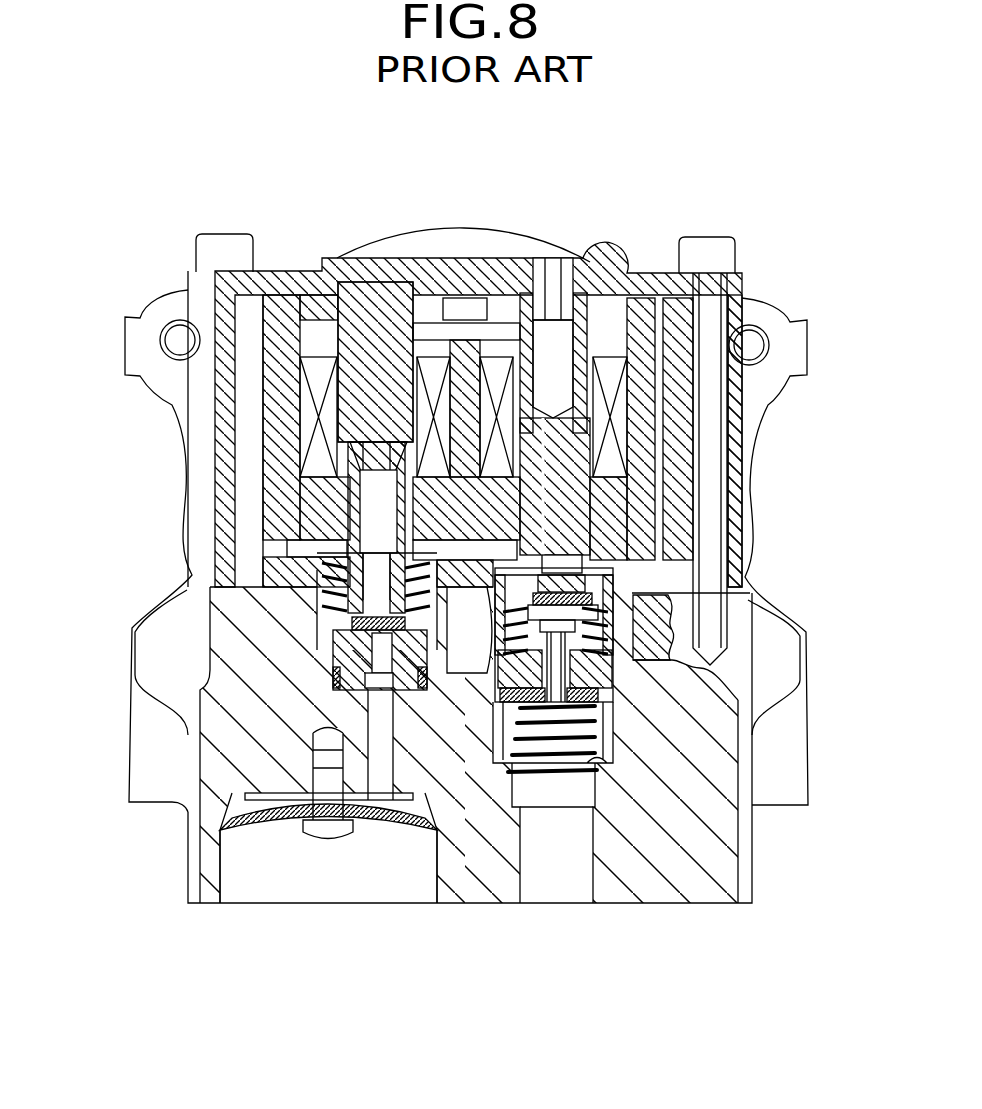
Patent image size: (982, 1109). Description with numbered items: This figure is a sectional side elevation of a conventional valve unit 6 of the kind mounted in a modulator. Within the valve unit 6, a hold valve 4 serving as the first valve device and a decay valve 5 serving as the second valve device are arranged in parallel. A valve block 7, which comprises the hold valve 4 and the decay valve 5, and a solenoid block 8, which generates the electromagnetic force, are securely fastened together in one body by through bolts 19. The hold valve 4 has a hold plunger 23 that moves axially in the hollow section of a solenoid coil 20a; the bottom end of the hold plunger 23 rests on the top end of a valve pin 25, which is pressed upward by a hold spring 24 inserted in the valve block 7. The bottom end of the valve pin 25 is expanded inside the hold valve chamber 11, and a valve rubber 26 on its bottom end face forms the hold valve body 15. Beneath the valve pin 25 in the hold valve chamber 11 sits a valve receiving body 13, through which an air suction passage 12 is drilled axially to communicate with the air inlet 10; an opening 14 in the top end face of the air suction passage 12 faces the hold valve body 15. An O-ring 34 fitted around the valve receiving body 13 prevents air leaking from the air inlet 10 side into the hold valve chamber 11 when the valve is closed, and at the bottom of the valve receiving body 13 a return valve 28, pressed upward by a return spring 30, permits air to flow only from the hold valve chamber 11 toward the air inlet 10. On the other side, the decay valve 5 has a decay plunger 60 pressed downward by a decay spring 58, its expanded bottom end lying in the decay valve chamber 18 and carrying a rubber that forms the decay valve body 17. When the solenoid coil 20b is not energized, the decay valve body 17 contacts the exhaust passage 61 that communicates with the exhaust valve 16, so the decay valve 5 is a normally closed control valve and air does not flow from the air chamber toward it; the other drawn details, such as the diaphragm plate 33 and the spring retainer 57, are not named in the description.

The hold valve 4 is at (600, 305).
The decay valve 5 is at (338, 330).
The valve unit 6 is at (648, 272).
The valve block 7 is at (163, 807).
The solenoid block 8 is at (743, 322).
The air inlet 10 is at (558, 882).
The hold valve chamber 11 is at (557, 647).
The air suction passage 12 is at (612, 655).
The valve receiving body 13 is at (667, 660).
The opening 14 is at (478, 650).
The hold valve body 15 is at (585, 600).
The exhaust valve 16 is at (272, 827).
The decay valve body 17 is at (333, 665).
The decay valve chamber 18 is at (318, 645).
The through bolts 19 is at (220, 247).
The solenoid coil 20a is at (612, 380).
The solenoid coil 20b is at (317, 390).
The hold plunger 23 is at (582, 315).
The hold spring 24 is at (445, 740).
The valve pin 25 is at (552, 453).
The valve rubber 26 is at (600, 615).
The return valve 28 is at (753, 807).
The return spring 30 is at (612, 763).
The diaphragm plate 33 is at (407, 820).
The O-ring 34 is at (752, 719).
The spring retainer 57 is at (700, 737).
The decay spring 58 is at (322, 612).
The decay plunger 60 is at (353, 480).
The exhaust passage 61 is at (375, 717).